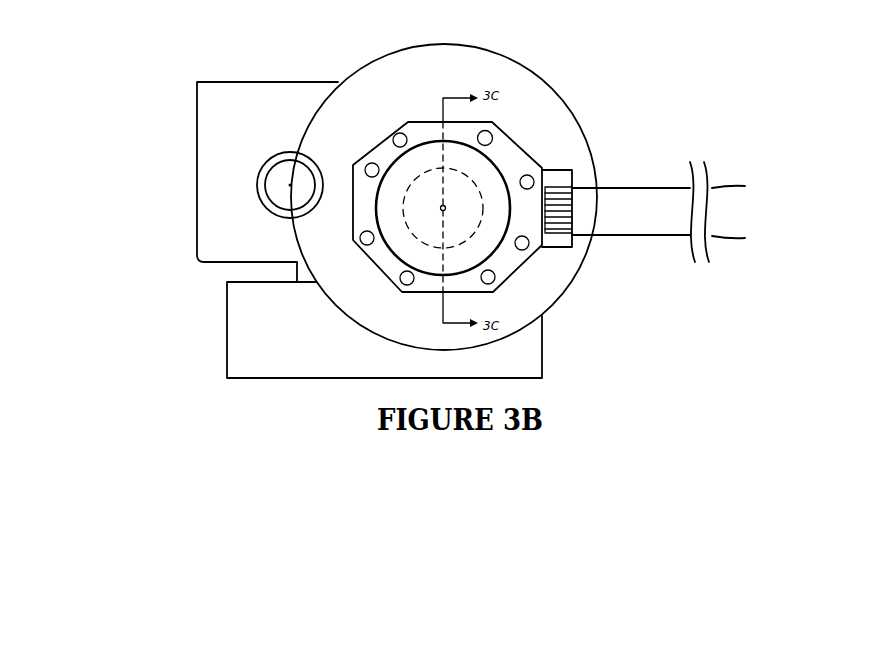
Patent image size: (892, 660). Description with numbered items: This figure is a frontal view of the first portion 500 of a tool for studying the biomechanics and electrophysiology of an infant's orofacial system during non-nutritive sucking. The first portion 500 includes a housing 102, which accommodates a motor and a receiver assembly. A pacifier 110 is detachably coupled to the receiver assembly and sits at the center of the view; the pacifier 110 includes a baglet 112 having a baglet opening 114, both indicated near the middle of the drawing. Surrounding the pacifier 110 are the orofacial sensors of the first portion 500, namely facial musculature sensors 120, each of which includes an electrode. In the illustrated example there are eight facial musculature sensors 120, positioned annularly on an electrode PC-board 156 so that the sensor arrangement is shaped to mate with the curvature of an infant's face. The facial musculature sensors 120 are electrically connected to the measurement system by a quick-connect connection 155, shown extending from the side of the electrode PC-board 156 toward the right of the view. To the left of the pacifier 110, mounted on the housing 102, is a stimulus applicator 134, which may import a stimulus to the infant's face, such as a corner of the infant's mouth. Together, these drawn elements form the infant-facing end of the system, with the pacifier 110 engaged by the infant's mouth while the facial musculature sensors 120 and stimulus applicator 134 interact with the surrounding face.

The housing 102 is at (228, 137).
The stimulus applicator 134 is at (278, 185).
The pacifier 110 is at (425, 157).
The baglet 112 is at (441, 209).
The baglet opening 114 is at (410, 215).
The facial musculature sensors 120 is at (395, 285).
The quick-connect connection 155 is at (584, 218).
The electrode PC-board 156 is at (508, 263).
The first portion 500 is at (170, 505).